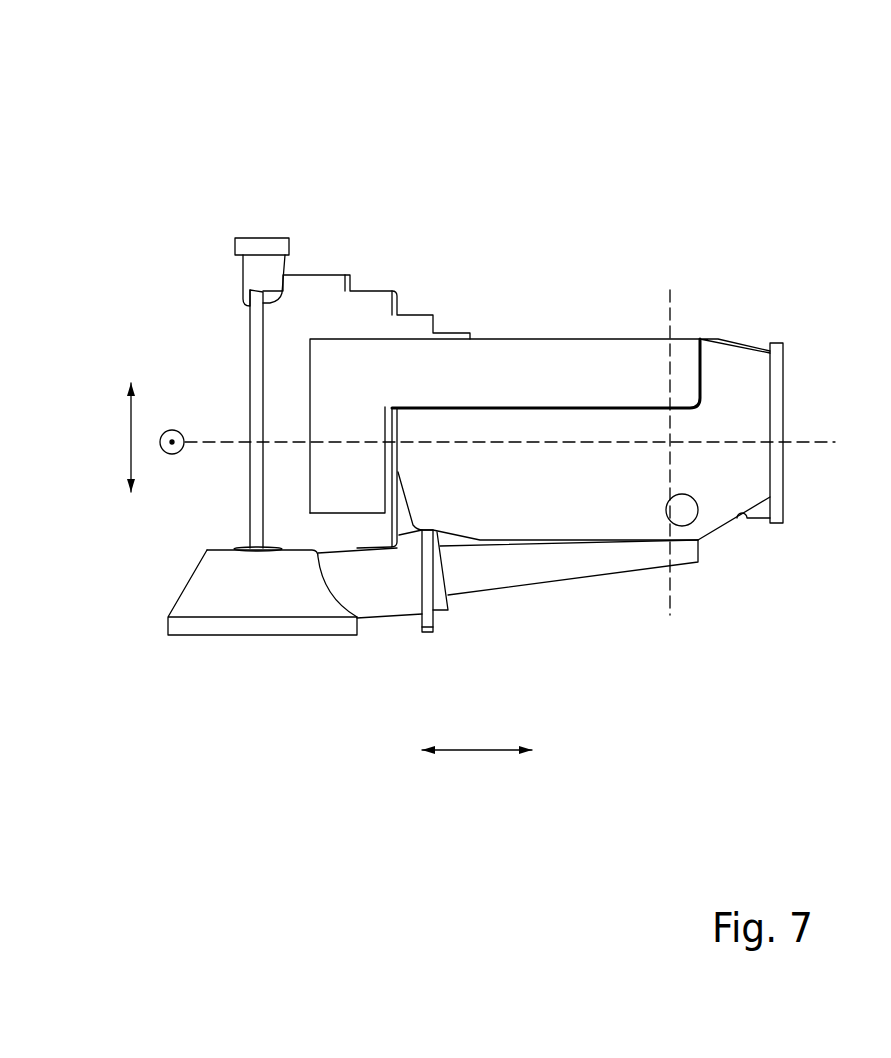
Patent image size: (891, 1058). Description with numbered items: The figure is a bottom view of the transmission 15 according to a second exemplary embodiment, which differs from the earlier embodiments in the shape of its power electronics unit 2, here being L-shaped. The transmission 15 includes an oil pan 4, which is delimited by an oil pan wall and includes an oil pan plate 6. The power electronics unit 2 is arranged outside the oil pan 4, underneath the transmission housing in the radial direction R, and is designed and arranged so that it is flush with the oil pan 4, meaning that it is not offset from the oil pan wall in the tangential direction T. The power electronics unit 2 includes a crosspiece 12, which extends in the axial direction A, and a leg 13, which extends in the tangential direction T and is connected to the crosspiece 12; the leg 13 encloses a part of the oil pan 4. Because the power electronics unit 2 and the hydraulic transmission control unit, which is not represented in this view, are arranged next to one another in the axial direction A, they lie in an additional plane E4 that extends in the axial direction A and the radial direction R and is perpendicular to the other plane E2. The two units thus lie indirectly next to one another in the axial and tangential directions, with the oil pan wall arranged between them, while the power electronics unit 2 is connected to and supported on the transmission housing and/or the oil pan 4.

The power electronics unit 2 is at (503, 325).
The oil pan 4 is at (722, 317).
The oil pan plate 6 is at (577, 497).
The crosspiece 12 is at (588, 362).
The leg 13 is at (343, 485).
The transmission 15 is at (338, 205).
The radial direction R is at (170, 430).
The other plane E2 is at (670, 312).
The additional plane E4 is at (810, 440).
The tangential direction T is at (116, 437).
The axial direction A is at (477, 726).